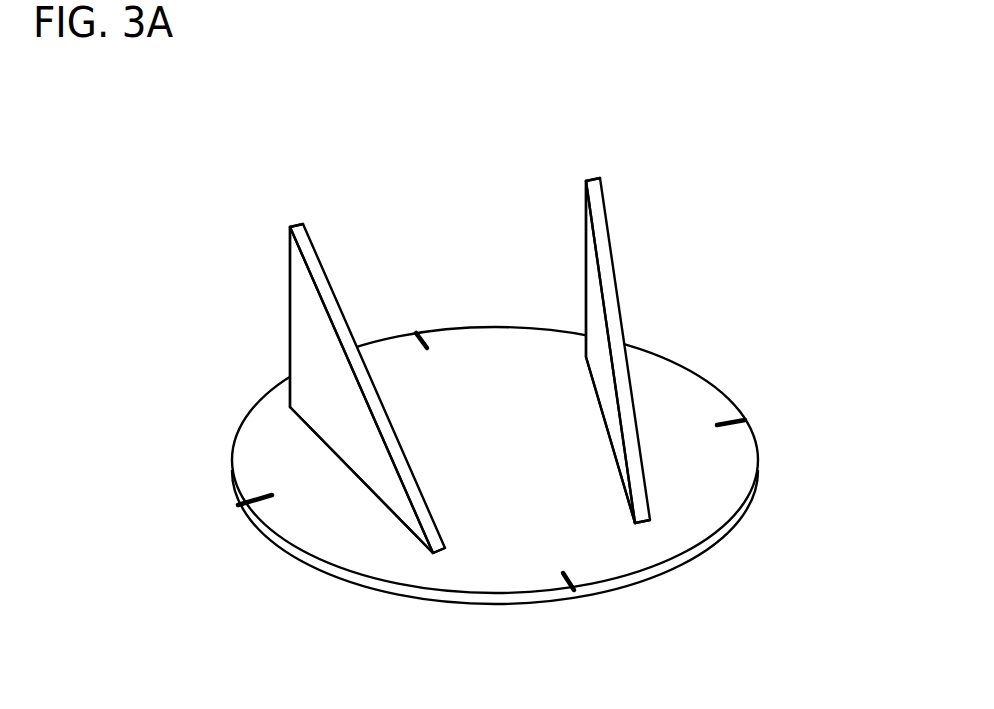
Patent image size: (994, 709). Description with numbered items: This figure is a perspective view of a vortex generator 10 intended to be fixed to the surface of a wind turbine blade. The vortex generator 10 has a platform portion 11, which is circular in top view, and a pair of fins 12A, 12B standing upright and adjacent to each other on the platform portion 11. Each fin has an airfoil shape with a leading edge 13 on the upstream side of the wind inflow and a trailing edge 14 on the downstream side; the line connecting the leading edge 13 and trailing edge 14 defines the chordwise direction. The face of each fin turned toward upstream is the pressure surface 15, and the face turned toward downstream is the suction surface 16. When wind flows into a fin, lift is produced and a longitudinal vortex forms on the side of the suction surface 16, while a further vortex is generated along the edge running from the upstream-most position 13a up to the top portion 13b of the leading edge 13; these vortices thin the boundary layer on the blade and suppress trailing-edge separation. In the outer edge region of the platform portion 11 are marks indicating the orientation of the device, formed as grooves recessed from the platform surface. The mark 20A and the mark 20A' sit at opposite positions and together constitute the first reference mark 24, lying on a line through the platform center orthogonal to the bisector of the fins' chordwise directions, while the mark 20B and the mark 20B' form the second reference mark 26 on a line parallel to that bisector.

The vortex generator 10 is at (504, 393).
The platform portion 11 is at (692, 388).
The fin 12A is at (603, 246).
The fin 12B is at (310, 255).
The leading edge 13 is at (558, 414).
The upstream-most position 13a is at (441, 556).
The top portion 13b is at (293, 225).
The trailing edge 14 is at (290, 300).
The pressure surface 15 is at (303, 345).
The suction surface 16 is at (313, 292).
The first reference mark 24 is at (504, 484).
The second reference mark 26 is at (487, 476).
The mark 20A is at (731, 422).
The mark 20A' is at (255, 500).
The mark 20B is at (568, 581).
The mark 20B' is at (421, 340).